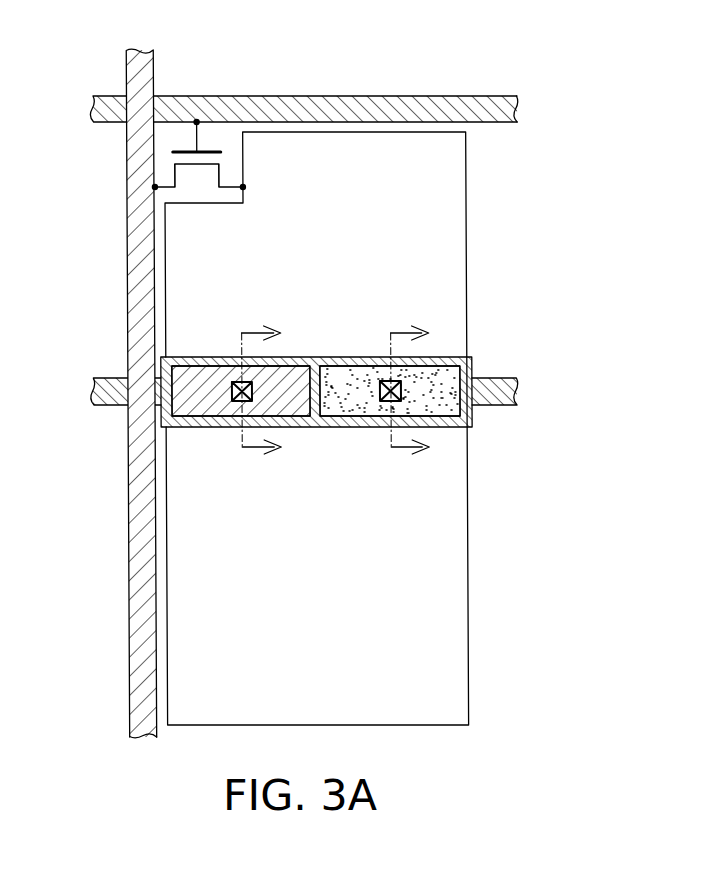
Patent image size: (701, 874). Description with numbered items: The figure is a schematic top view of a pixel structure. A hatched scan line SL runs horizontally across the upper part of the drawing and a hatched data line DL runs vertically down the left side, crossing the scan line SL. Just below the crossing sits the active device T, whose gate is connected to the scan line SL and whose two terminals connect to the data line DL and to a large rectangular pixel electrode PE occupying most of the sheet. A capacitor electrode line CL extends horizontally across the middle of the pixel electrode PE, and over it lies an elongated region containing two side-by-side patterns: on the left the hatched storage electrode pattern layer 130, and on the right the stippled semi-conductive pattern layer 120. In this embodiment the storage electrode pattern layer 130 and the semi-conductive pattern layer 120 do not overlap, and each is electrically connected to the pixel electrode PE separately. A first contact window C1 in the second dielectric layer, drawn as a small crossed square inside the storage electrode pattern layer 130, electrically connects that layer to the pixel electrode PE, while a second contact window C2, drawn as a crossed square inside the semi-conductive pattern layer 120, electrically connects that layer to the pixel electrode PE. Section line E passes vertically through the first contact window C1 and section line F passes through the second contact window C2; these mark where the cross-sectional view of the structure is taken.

The data line DL is at (134, 63).
The scan line SL is at (107, 112).
The active device T is at (208, 152).
The pixel electrode PE is at (465, 174).
The capacitor electrode line CL is at (515, 388).
The storage electrode pattern layer 130 is at (208, 357).
The semi-conductive pattern layer 120 is at (350, 365).
The first contact window C1 is at (228, 396).
The second contact window C2 is at (377, 397).
The line E-E' E is at (272, 392).
The line F-F' F is at (422, 392).